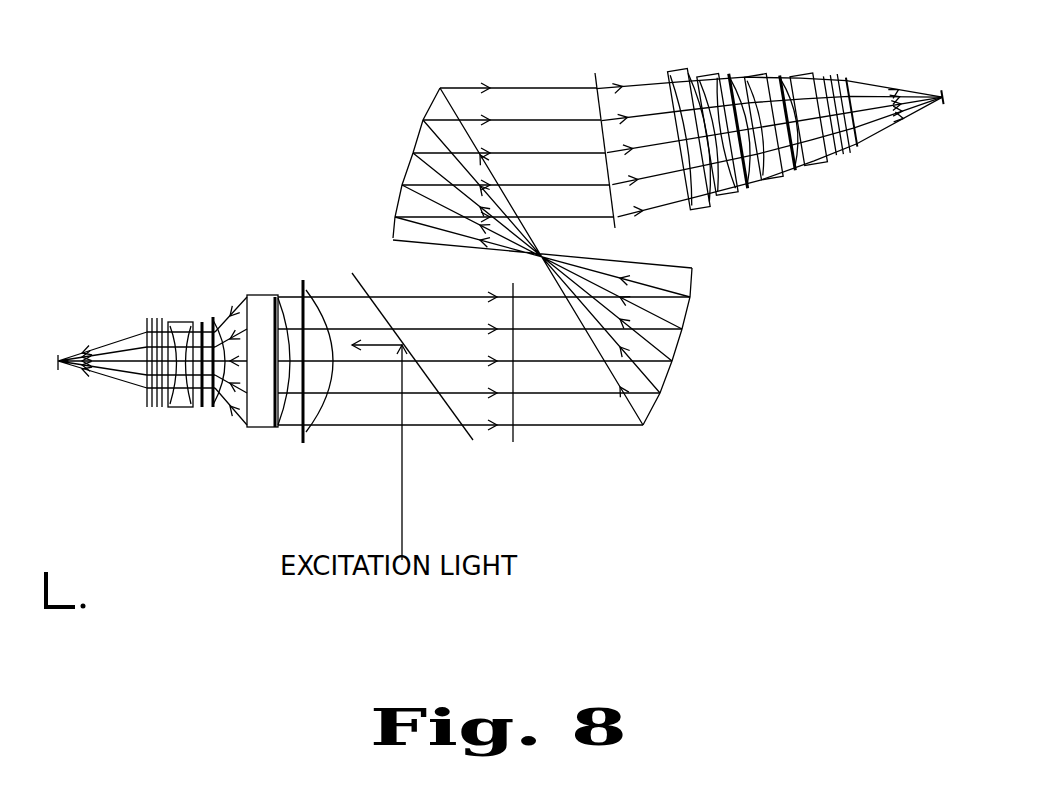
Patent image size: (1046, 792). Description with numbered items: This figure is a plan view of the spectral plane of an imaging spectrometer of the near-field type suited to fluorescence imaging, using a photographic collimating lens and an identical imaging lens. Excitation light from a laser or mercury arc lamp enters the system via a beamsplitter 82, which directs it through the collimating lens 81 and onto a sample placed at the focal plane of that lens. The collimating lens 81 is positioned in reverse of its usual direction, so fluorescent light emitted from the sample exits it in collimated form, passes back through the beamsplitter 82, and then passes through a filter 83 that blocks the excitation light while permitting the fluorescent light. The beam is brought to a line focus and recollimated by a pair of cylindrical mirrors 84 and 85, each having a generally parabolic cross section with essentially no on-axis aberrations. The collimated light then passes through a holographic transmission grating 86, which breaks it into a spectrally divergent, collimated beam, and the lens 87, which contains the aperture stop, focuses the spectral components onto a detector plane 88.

The collimating lens 81 is at (152, 372).
The beamsplitter 82 is at (395, 340).
The filter 83 is at (515, 376).
The cylindrical mirror 84 is at (686, 346).
The cylindrical mirror 85 is at (395, 163).
The holographic transmission grating 86 is at (594, 135).
The lens 87 is at (764, 120).
The detector plane 88 is at (943, 118).